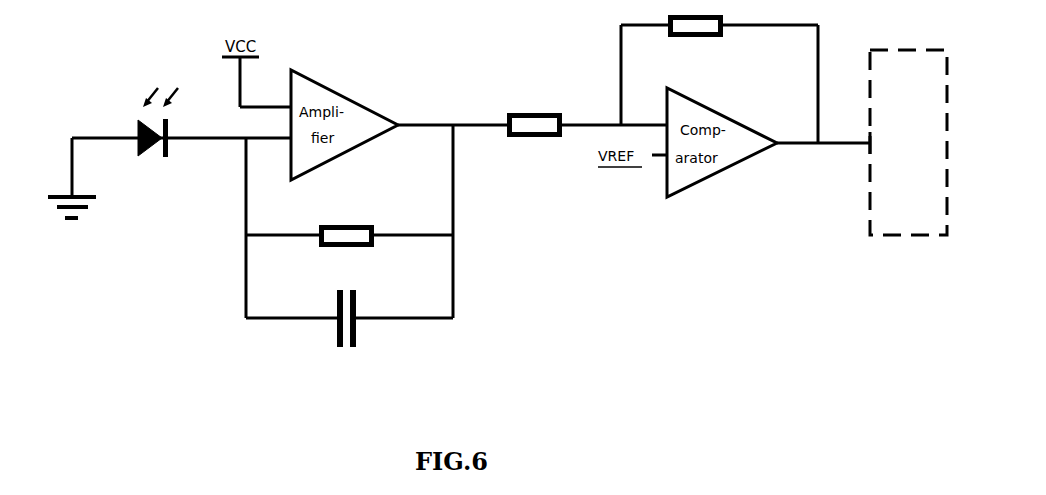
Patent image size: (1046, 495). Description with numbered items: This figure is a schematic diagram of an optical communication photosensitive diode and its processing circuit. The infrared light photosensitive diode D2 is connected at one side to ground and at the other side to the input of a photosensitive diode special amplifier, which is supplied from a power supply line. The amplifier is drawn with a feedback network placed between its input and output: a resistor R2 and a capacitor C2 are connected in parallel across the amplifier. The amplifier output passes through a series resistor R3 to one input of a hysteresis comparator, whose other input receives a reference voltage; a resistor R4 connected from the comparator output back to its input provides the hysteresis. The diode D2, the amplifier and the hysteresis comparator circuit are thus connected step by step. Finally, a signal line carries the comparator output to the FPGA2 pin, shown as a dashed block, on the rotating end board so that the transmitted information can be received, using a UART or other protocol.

The infrared light photosensitive diode D2 is at (158, 106).
The feedback resistor R2 is at (347, 255).
The feedback capacitor C2 is at (347, 337).
The series resistor R3 is at (535, 144).
The comparator feedback resistor R4 is at (696, 45).
The FPGA2 pin FPGA2 is at (908, 142).